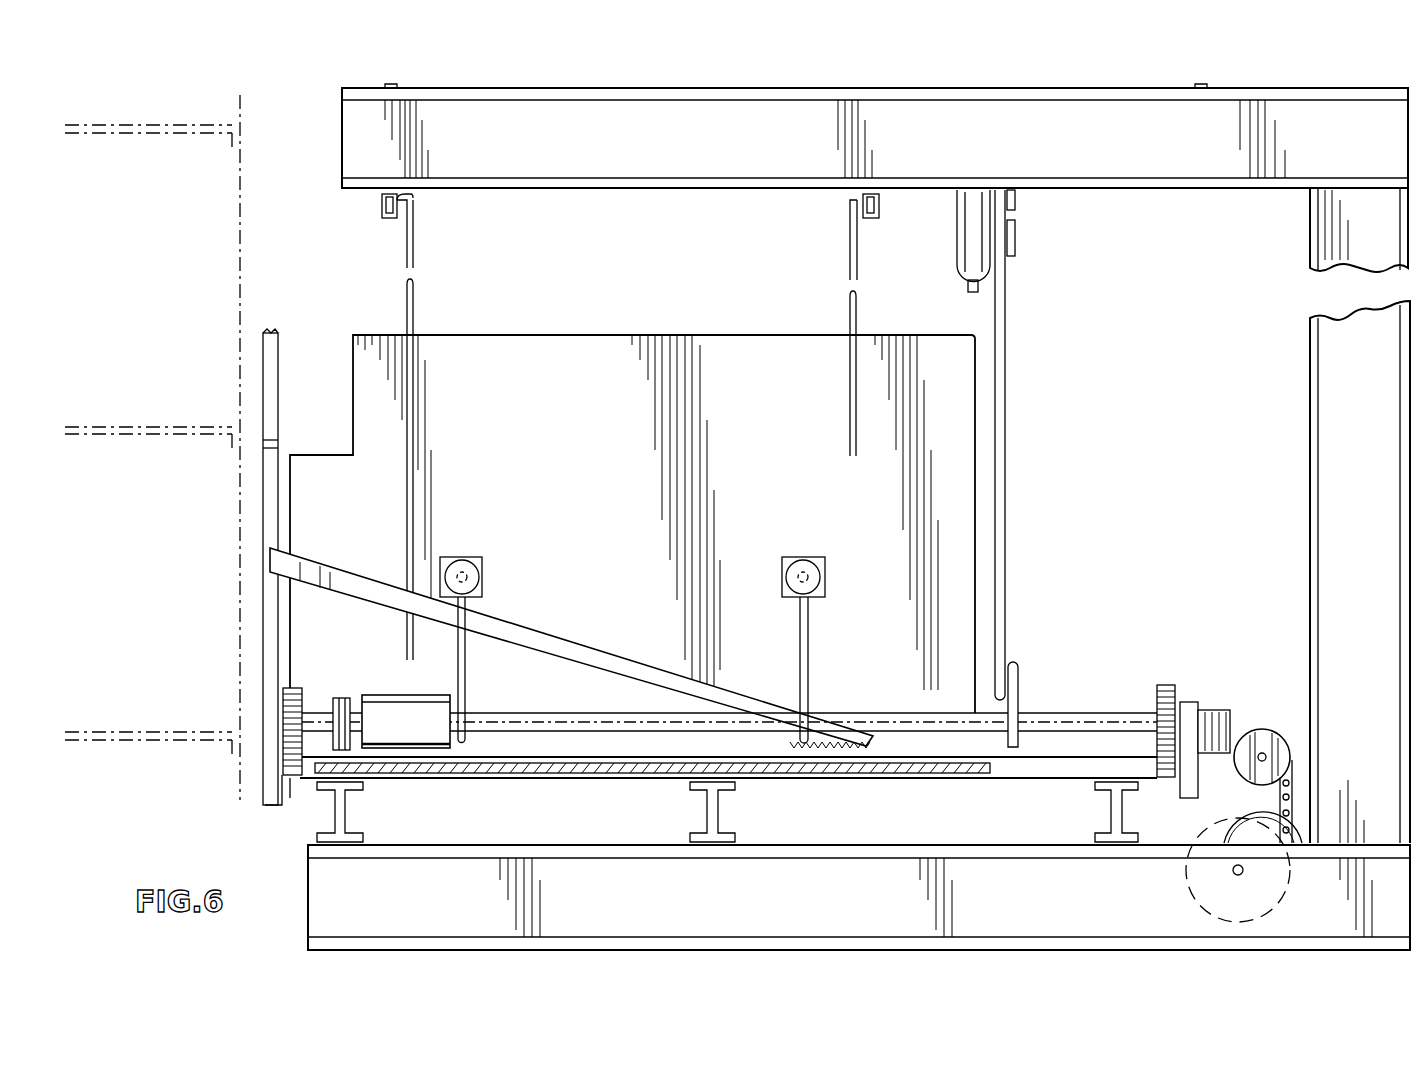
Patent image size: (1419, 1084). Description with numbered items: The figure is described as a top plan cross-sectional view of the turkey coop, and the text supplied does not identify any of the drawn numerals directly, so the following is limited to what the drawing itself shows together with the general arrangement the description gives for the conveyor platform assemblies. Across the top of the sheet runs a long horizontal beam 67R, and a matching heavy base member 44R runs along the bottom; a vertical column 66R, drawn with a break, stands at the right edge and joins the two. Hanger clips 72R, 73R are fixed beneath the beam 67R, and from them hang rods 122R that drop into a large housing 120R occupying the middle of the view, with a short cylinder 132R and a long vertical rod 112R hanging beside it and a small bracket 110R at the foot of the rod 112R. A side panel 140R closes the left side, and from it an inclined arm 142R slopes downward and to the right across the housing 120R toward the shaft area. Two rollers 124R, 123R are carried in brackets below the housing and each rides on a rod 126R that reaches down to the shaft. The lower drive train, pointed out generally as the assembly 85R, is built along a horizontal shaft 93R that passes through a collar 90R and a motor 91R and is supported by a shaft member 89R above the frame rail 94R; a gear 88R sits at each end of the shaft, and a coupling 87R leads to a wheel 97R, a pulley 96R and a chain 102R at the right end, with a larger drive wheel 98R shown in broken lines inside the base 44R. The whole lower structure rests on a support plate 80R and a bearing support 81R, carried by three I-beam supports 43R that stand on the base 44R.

The I-beam support 43R is at (340, 811).
The base frame member 44R is at (768, 912).
The vertical frame column 66R is at (1327, 383).
The upper horizontal frame beam 67R is at (671, 152).
The hanger clip 72R is at (381, 206).
The hanger clip 73R is at (880, 206).
The support plate 80R is at (627, 794).
The bearing support 81R is at (1165, 778).
The drive assembly 85R is at (1098, 612).
The drive coupling 87R is at (1189, 706).
The gear 88R is at (292, 690).
The shaft 89R is at (1047, 724).
The collar 90R is at (346, 700).
The motor 91R is at (403, 710).
The drive shaft 93R is at (1148, 716).
The frame rail 94R is at (1073, 745).
The pulley 96R is at (1283, 784).
The wheel 97R is at (1262, 735).
The drive wheel 98R is at (1268, 895).
The chain 102R is at (1298, 813).
The bracket 110R is at (1013, 668).
The vertical rod 112R is at (1002, 464).
The housing 120R is at (672, 480).
The hanger rod 122R is at (412, 297).
The roller 123R is at (804, 560).
The roller 124R is at (463, 560).
The roller rod 126R is at (466, 680).
The cylinder 132R is at (968, 246).
The side panel 140R is at (272, 416).
The inclined arm 142R is at (361, 580).